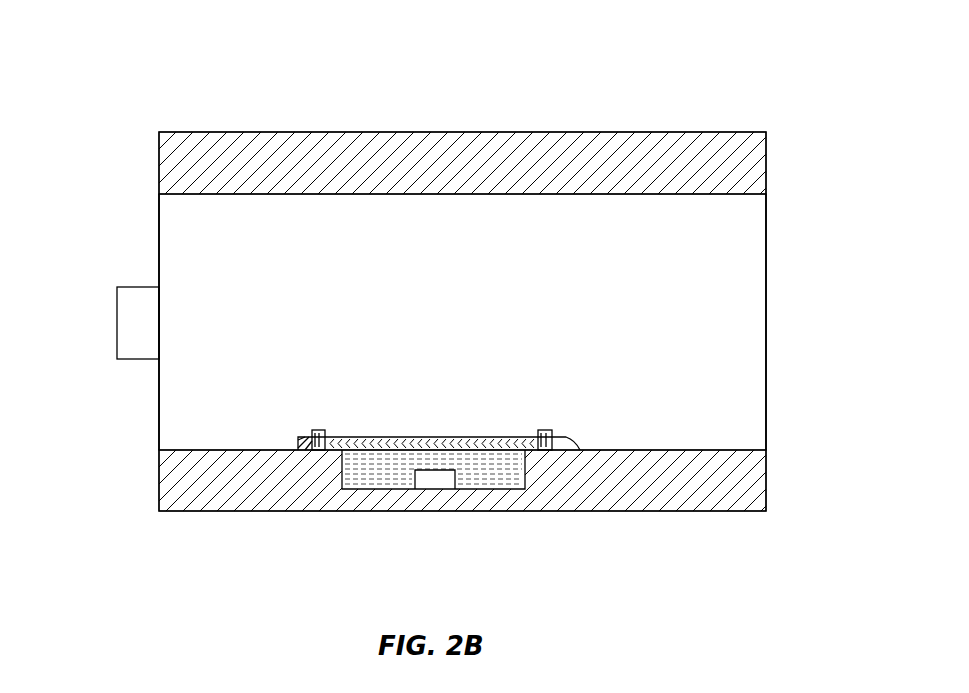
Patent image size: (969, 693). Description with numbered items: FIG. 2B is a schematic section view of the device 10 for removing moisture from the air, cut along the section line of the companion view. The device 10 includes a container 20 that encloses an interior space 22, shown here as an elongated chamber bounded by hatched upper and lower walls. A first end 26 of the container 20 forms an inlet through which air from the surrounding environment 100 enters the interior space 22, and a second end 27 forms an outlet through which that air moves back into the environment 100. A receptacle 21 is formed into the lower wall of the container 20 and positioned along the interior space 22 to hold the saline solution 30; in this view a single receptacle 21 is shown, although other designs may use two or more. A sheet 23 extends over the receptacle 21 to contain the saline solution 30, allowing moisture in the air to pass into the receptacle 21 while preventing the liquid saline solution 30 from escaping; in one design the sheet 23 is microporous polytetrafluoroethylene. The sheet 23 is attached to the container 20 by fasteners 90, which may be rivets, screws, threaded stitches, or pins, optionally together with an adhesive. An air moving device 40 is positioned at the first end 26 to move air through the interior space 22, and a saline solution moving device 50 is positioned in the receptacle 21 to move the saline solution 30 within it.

The environment 100 is at (825, 51).
The device 10 is at (237, 85).
The container 20 is at (617, 132).
The receptacle 21 is at (373, 492).
The interior space 22 is at (456, 250).
The sheet 23 is at (335, 450).
The first end 26 is at (159, 243).
The second end 27 is at (766, 375).
The saline solution 30 is at (480, 470).
The air moving device 40 is at (136, 308).
The saline solution moving device 50 is at (437, 482).
The fastener 90 is at (312, 445).